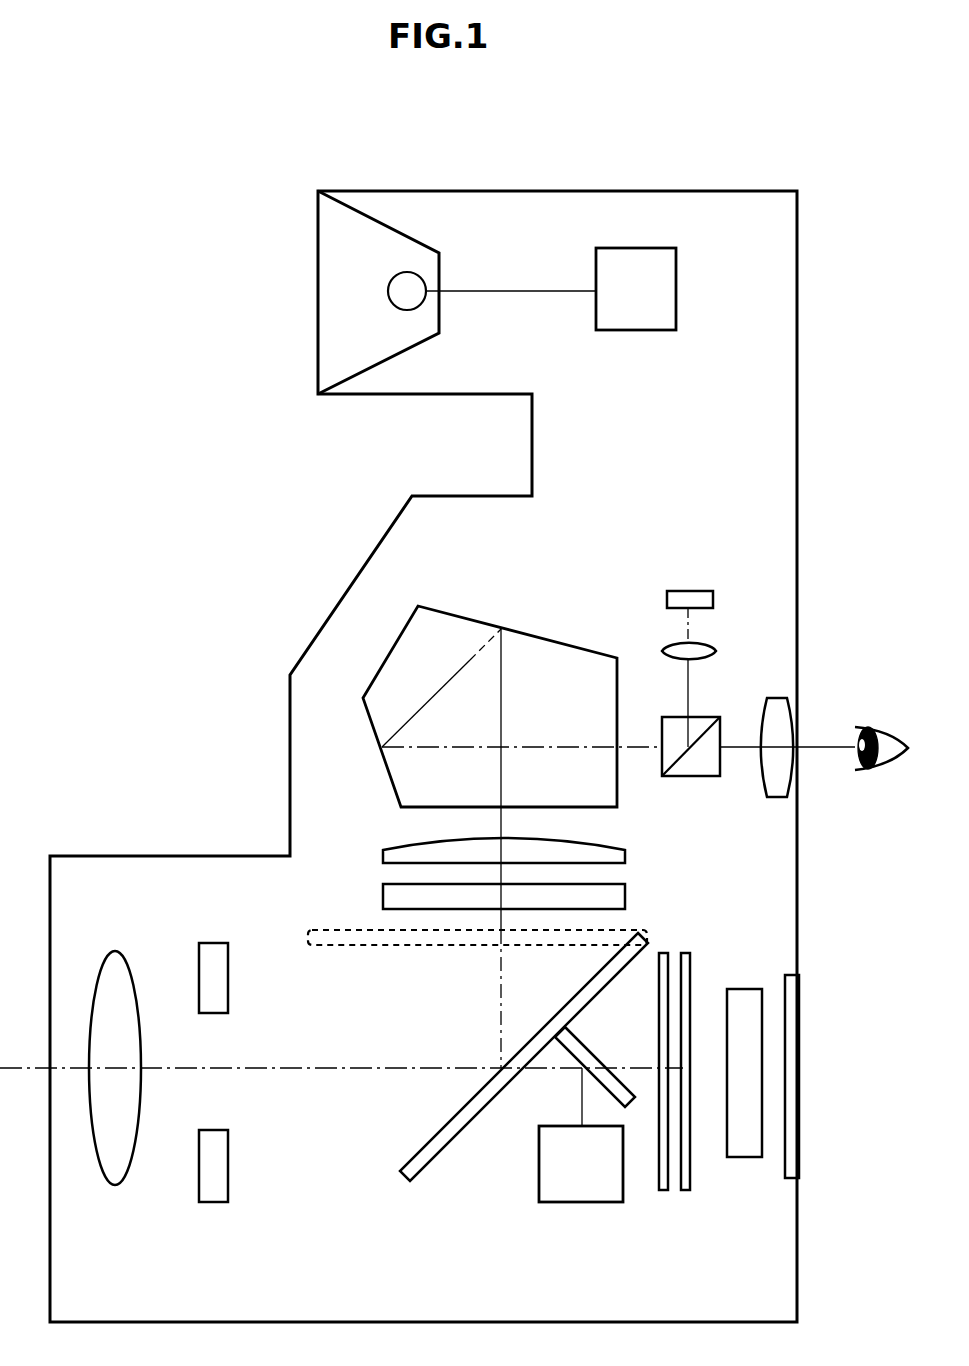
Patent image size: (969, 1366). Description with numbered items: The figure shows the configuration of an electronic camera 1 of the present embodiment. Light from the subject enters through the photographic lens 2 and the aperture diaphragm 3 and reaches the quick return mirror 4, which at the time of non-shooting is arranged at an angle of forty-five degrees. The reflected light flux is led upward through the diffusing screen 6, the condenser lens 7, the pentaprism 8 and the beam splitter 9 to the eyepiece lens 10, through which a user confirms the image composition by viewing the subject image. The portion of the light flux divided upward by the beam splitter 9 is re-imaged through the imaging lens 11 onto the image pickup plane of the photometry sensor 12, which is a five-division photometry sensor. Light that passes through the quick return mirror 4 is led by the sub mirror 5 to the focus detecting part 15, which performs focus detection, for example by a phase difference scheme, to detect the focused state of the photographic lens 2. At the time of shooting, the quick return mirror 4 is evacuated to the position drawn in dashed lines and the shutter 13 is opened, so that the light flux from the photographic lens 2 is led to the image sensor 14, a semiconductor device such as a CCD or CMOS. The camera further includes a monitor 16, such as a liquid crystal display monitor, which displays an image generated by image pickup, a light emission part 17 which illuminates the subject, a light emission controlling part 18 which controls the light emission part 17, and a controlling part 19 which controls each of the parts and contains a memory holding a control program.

The electronic camera 1 is at (276, 705).
The photographic lens 2 is at (115, 950).
The aperture diaphragm 3 is at (214, 943).
The quick return mirror 4 is at (400, 1171).
The sub mirror 5 is at (603, 1067).
The diffusing screen 6 is at (383, 898).
The condenser lens 7 is at (383, 855).
The pentaprism 8 is at (443, 610).
The beam splitter 9 is at (662, 735).
The eyepiece lens 10 is at (777, 797).
The imaging lens 11 is at (716, 652).
The photometry sensor 12 is at (667, 599).
The shutter 13 is at (663, 953).
The image sensor 14 is at (685, 953).
The focus detecting part 15 is at (539, 1157).
The monitor 16 is at (799, 990).
The light emission part 17 is at (440, 266).
The light emission controlling part 18 is at (676, 300).
The controlling part 19 is at (735, 1157).